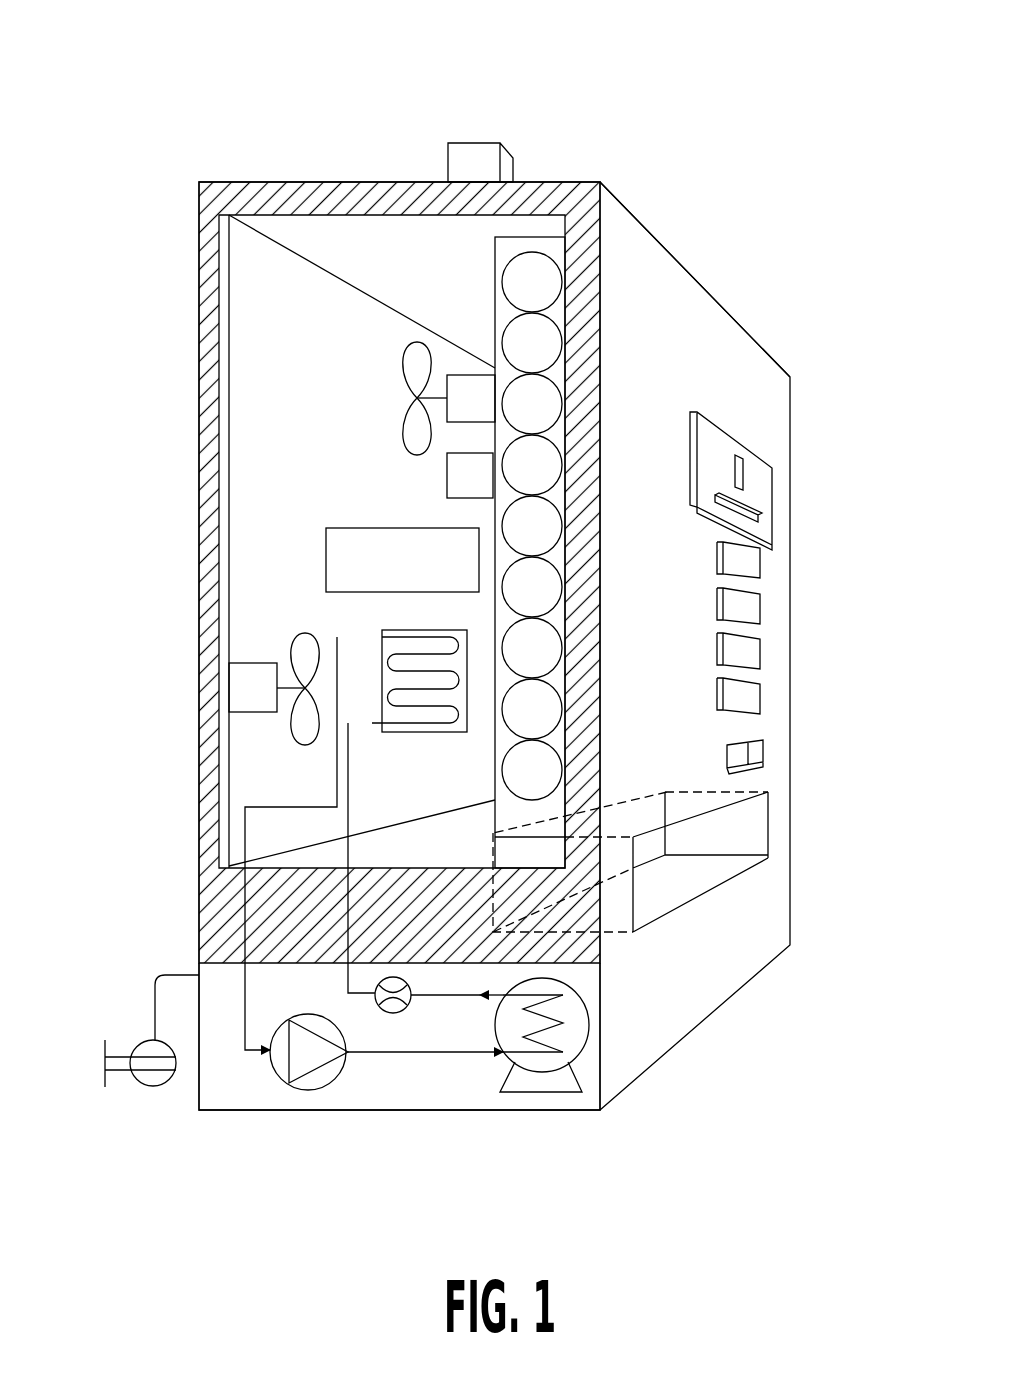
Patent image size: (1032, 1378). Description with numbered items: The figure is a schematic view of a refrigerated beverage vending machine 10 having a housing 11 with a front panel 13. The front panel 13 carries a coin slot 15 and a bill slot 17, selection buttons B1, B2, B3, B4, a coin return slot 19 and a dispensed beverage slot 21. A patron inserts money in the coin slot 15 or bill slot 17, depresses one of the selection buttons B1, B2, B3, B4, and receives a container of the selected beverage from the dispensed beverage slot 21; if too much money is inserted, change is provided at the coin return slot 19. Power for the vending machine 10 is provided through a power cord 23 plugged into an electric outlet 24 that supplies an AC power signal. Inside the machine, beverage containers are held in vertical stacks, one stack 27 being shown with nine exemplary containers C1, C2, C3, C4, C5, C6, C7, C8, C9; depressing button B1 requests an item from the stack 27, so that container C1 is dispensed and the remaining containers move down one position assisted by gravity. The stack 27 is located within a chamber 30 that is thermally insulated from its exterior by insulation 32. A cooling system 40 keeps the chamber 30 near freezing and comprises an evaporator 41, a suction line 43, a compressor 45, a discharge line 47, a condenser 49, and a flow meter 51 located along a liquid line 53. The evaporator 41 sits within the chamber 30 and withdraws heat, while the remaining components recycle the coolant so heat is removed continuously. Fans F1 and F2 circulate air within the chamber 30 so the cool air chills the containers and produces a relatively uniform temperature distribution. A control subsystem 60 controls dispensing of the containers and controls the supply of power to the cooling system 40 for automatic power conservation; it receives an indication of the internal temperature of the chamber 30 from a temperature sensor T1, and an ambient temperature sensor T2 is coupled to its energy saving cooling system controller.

The refrigerated beverage vending machine 10 is at (100, 112).
The housing 11 is at (590, 182).
The front panel 13 is at (650, 298).
The coin slot 15 is at (743, 466).
The bill slot 17 is at (752, 508).
The coin return slot 19 is at (765, 752).
The dispensed beverage slot 21 is at (692, 882).
The power cord 23 is at (165, 975).
The electric outlet 24 is at (135, 1048).
The stack 27 is at (532, 248).
The chamber 30 is at (247, 247).
The insulation 32 is at (353, 181).
The cooling system 40 is at (452, 1040).
The evaporator 41 is at (380, 658).
The suction line 43 is at (250, 1055).
The compressor 45 is at (312, 1062).
The discharge line 47 is at (380, 1055).
The condenser 49 is at (520, 1093).
The flow meter 51 is at (400, 1013).
The liquid line 53 is at (347, 978).
The control subsystem 60 is at (355, 528).
The selection button B1 is at (760, 568).
The selection button B2 is at (760, 612).
The selection button B3 is at (760, 651).
The selection button B4 is at (760, 695).
The beverage container C1 is at (516, 785).
The beverage container C2 is at (516, 724).
The beverage container C3 is at (516, 663).
The beverage container C4 is at (516, 602).
The beverage container C5 is at (516, 541).
The beverage container C6 is at (516, 480).
The beverage container C7 is at (516, 419).
The beverage container C8 is at (516, 358).
The beverage container C9 is at (516, 297).
The fan F1 is at (238, 705).
The fan F2 is at (456, 415).
The temperature sensor T1 is at (470, 475).
The ambient temperature sensor T2 is at (480, 162).